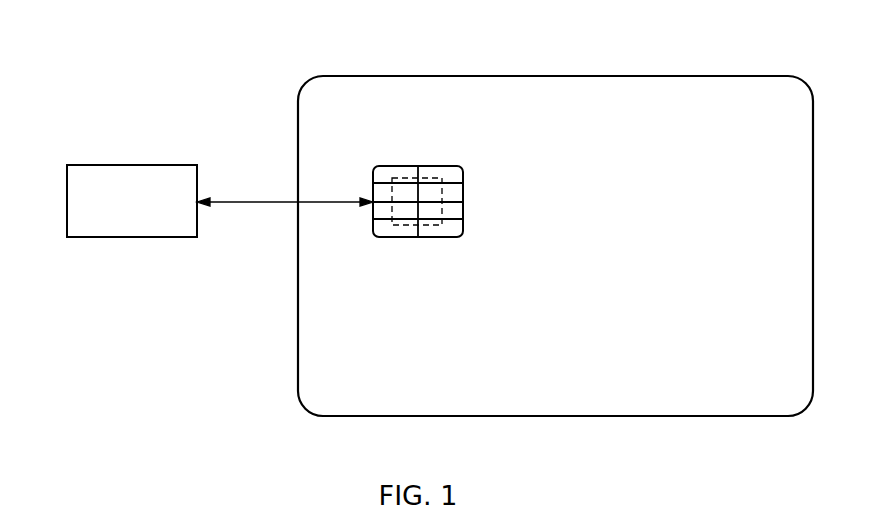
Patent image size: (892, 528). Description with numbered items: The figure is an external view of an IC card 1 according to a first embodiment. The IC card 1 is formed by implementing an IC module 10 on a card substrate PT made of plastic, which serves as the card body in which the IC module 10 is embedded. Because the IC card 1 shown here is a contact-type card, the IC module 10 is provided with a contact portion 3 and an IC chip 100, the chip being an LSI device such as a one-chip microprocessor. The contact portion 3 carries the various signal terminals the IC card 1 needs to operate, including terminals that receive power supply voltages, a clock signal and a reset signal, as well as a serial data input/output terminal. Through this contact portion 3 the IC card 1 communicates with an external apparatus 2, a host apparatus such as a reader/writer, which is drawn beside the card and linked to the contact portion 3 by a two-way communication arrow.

The IC card 1 is at (717, 76).
The external apparatus 2 is at (138, 165).
The contact portion 3 is at (453, 226).
The IC module 10 is at (446, 192).
The IC chip 100 is at (427, 238).
The card substrate PT is at (718, 400).